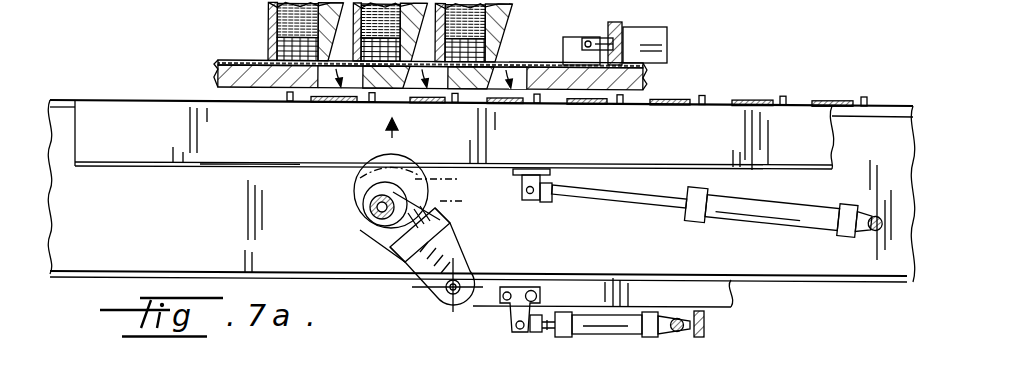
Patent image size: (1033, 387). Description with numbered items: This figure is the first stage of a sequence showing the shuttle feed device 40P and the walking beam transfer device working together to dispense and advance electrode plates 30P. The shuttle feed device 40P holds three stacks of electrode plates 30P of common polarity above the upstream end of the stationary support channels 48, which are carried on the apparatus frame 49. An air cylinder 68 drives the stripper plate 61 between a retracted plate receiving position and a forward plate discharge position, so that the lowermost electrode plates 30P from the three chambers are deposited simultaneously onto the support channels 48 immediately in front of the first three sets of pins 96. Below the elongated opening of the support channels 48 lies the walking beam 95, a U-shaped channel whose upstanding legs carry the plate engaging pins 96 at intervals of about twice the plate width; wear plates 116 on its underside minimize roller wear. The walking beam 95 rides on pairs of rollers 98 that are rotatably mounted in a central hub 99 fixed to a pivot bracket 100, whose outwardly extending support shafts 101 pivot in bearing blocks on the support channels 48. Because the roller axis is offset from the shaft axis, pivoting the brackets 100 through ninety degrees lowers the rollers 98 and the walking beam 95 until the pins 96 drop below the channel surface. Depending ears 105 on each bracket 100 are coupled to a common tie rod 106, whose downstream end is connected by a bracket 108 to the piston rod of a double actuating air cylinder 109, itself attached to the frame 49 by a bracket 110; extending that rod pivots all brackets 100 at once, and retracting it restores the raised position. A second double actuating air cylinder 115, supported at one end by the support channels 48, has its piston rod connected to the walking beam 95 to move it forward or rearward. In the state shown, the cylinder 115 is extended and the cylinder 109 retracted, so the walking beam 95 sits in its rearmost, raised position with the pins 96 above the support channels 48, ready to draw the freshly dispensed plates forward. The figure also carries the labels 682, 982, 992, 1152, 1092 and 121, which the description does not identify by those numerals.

The shuttle feed device 40P is at (252, 36).
The electrode plate engaging pins 96 is at (285, 96).
The electrode plates 30P is at (326, 97).
The stripper plate 61 is at (545, 62).
The clamp bracket 682 is at (600, 36).
The air cylinder 68 is at (665, 30).
The walking beam 95 is at (180, 171).
The wear plates 116 is at (241, 180).
The pivot hub 982 is at (383, 184).
The rollers 98 is at (432, 185).
The support shafts 101 is at (370, 212).
The lever arm 121 is at (386, 235).
The slide block 992 is at (445, 208).
The central hub 99 is at (447, 218).
The pivot bracket 100 is at (438, 240).
The depending ears 105 is at (425, 288).
The bracket 108 is at (510, 308).
The piston rod 1152 is at (645, 207).
The double actuating air cylinder 115 is at (805, 229).
The tie rod 106 is at (632, 273).
The piston rod 1092 is at (549, 333).
The double actuating air cylinder 109 is at (630, 336).
The bracket 110 is at (675, 334).
The frame 49 is at (702, 326).
The stationary support channels 48 is at (828, 281).